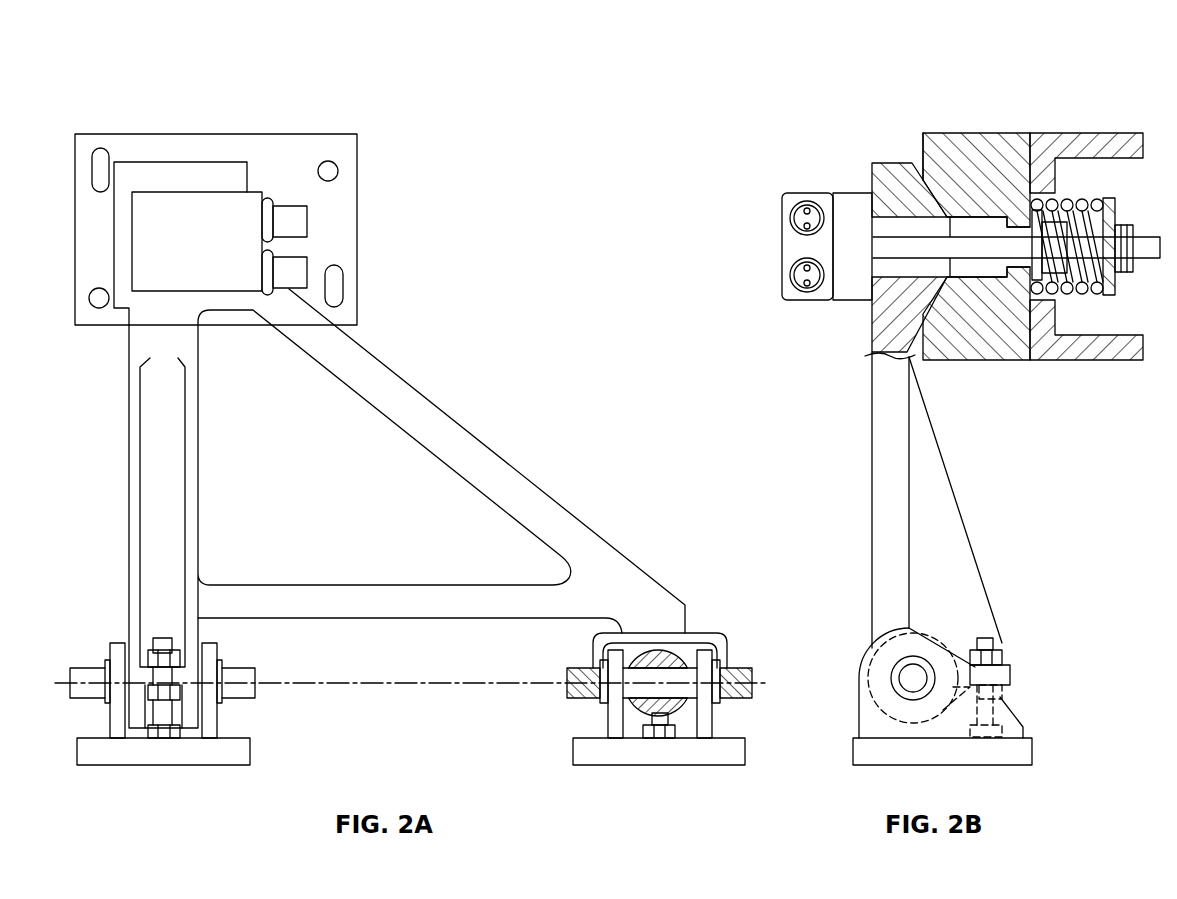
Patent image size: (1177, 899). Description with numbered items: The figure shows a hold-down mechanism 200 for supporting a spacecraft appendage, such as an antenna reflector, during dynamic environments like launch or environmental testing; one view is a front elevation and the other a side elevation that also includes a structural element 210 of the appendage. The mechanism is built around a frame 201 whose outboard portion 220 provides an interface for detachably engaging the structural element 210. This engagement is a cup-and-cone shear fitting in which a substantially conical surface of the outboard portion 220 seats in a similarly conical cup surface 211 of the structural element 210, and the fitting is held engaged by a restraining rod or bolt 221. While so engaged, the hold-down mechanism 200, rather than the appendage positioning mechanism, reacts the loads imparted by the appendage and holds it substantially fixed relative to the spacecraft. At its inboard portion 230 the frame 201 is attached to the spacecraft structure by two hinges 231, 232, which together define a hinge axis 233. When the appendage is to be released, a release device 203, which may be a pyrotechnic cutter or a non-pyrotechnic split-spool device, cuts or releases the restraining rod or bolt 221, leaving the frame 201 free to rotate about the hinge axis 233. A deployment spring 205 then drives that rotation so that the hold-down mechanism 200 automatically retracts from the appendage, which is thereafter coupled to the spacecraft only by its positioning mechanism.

In FIG. 2A, the hold-down mechanism 200 is at (437, 168).
In FIG. 2A, the frame 201 is at (547, 490).
In FIG. 2B, the frame 201 is at (883, 480).
In FIG. 2B, the release device 203 is at (780, 238).
In FIG. 2A, the deployment spring 205 is at (708, 630).
In FIG. 2B, the structural element 210 is at (1007, 117).
In FIG. 2B, the cup surface 211 is at (972, 343).
In FIG. 2B, the outboard portion 220 is at (893, 158).
In FIG. 2B, the restraining rod or bolt 221 is at (967, 233).
In FIG. 2A, the inboard portion 230 is at (150, 597).
In FIG. 2B, the inboard portion 230 is at (890, 616).
In FIG. 2A, the hinge 231 is at (207, 717).
In FIG. 2A, the hinge 232 is at (705, 722).
In FIG. 2A, the hinge axis 233 is at (427, 685).